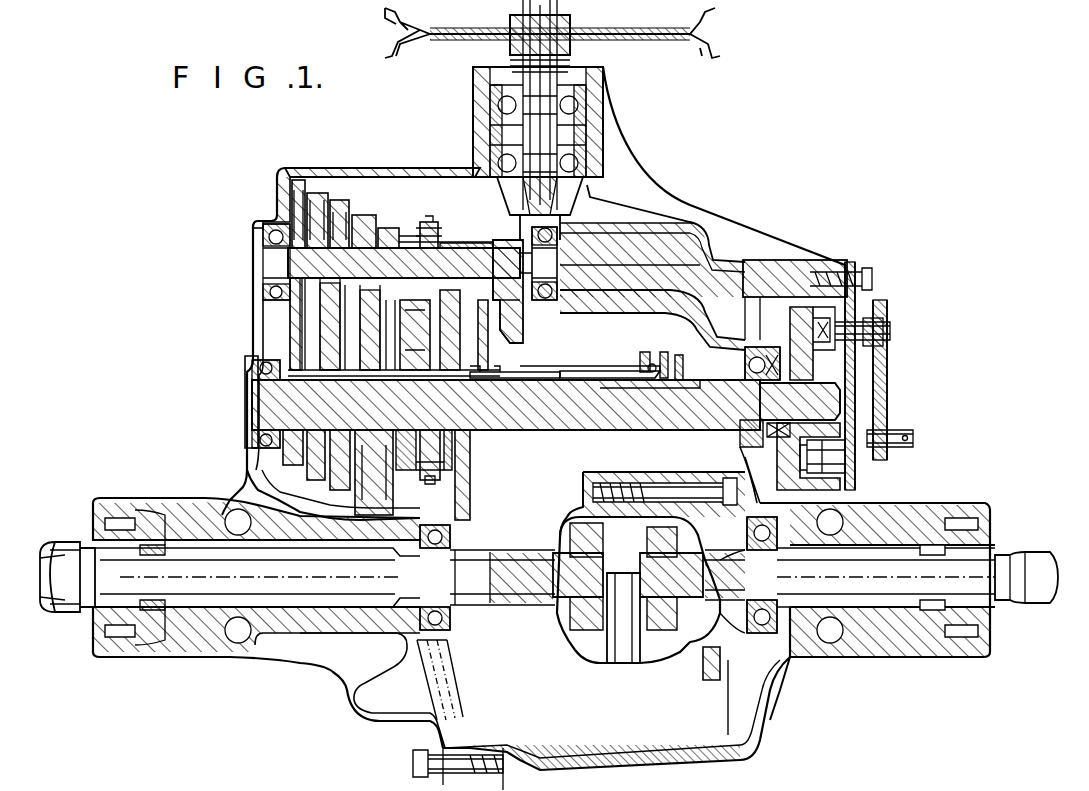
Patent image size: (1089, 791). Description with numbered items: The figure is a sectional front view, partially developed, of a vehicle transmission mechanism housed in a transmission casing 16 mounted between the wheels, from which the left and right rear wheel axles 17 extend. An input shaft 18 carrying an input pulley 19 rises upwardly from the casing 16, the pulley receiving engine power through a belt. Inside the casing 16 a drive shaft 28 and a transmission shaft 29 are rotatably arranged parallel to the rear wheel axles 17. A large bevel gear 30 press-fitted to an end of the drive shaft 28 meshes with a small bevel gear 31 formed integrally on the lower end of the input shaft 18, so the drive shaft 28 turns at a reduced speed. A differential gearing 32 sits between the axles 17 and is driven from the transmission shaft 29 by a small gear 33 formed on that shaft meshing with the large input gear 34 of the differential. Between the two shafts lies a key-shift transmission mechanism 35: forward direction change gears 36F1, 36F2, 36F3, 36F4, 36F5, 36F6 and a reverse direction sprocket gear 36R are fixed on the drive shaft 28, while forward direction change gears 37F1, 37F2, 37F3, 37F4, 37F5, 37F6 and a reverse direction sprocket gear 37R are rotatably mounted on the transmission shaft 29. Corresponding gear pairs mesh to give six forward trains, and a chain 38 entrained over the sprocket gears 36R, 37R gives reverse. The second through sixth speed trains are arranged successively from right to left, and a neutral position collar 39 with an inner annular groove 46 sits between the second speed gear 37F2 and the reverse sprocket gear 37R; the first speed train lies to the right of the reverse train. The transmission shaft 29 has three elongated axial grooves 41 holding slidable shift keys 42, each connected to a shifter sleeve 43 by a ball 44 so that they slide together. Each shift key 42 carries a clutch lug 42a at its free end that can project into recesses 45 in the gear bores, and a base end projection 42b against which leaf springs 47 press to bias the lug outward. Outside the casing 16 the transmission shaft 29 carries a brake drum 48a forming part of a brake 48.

The transmission casing 16 is at (398, 733).
The rear wheel axles 17 is at (310, 590).
The input shaft 18 is at (540, 135).
The input pulley 19 is at (410, 42).
The drive shaft 28 is at (560, 252).
The transmission shaft 29 is at (580, 415).
The large bevel gear 30 is at (520, 325).
The small bevel gear 31 is at (578, 206).
The differential gearing 32 is at (582, 650).
The small gear 33 is at (722, 370).
The large input gear 34 is at (752, 760).
The key-shift transmission mechanism 35 is at (252, 327).
The first speed forward direction change gear 36F1 is at (466, 242).
The second speed forward direction change gear 36F2 is at (389, 226).
The third speed forward direction change gear 36F3 is at (366, 213).
The fourth speed forward direction change gear 36F4 is at (340, 198).
The fifth speed forward direction change gear 36F5 is at (315, 190).
The sixth speed forward direction change gear 36F6 is at (296, 178).
The reverse direction sprocket gear 36R is at (428, 220).
The first speed forward direction change gear 37F1 is at (472, 510).
The second speed forward direction change gear 37F2 is at (430, 482).
The third speed forward direction change gear 37F3 is at (374, 517).
The fourth speed forward direction change gear 37F4 is at (338, 492).
The fifth speed forward direction change gear 37F5 is at (312, 474).
The sixth speed forward direction change gear 37F6 is at (290, 462).
The reverse direction sprocket gear 37R is at (418, 360).
The chain 38 is at (456, 470).
The neutral position collar 39 is at (410, 375).
The elongated axial grooves 41 is at (432, 378).
The shift keys 42 is at (588, 374).
The clutch lug 42a is at (505, 365).
The base end projection 42b is at (714, 330).
The shifter sleeve 43 is at (643, 360).
The ball 44 is at (680, 378).
The recesses 45 is at (315, 375).
The annular groove 46 is at (360, 375).
The leaf springs 47 is at (668, 352).
The brake 48 is at (860, 476).
The brake drum 48a is at (858, 300).